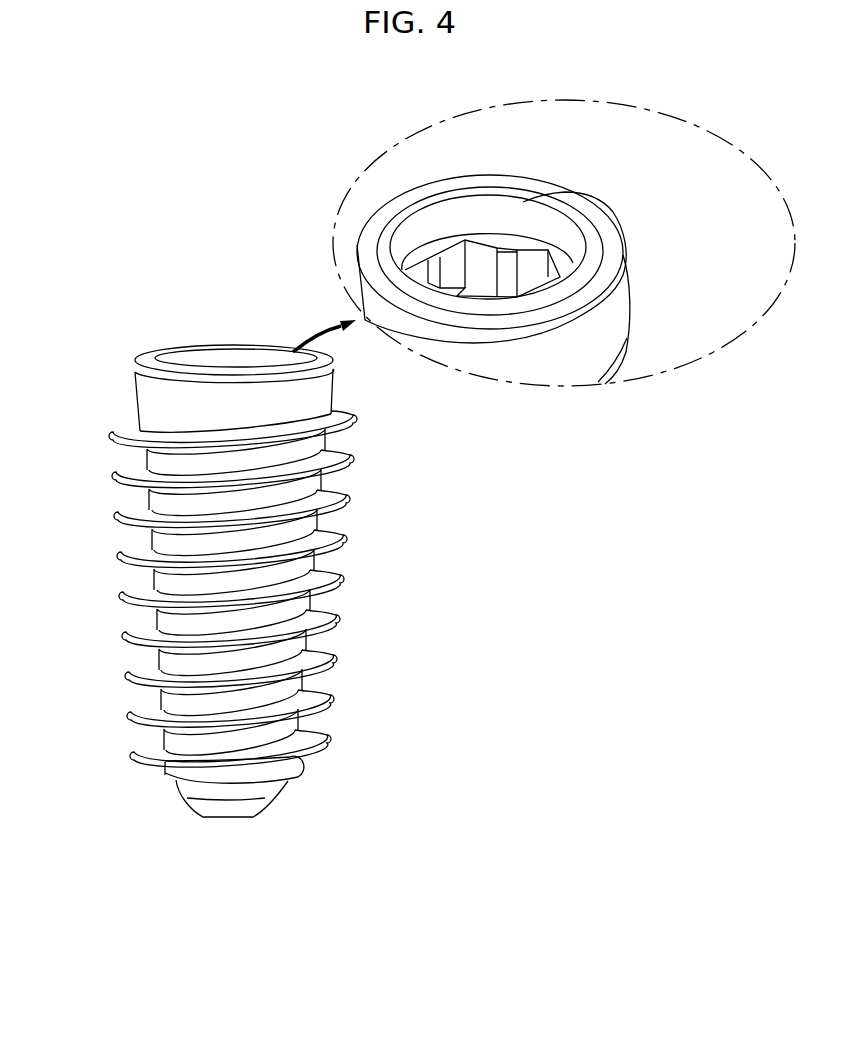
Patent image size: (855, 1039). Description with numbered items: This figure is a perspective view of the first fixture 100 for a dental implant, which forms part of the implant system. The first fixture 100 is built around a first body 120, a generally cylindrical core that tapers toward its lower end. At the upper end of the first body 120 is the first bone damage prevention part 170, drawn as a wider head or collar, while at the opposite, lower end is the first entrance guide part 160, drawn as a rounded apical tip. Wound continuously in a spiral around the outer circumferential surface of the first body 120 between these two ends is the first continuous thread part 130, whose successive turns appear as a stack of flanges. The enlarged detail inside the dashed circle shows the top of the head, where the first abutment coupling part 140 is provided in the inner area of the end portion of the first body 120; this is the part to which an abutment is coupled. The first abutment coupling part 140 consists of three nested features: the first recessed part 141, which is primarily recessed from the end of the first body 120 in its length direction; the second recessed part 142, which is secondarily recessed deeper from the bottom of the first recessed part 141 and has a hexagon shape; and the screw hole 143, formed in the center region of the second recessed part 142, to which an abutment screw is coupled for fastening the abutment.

The first fixture 100 is at (120, 315).
The first body 120 is at (155, 534).
The first continuous thread part 130 is at (118, 608).
The first abutment coupling part 140 is at (727, 190).
The first recessed part 141 is at (523, 202).
The second recessed part 142 is at (573, 263).
The screw hole 143 is at (617, 322).
The first entrance guide part 160 is at (186, 821).
The first bone damage prevention part 170 is at (130, 390).